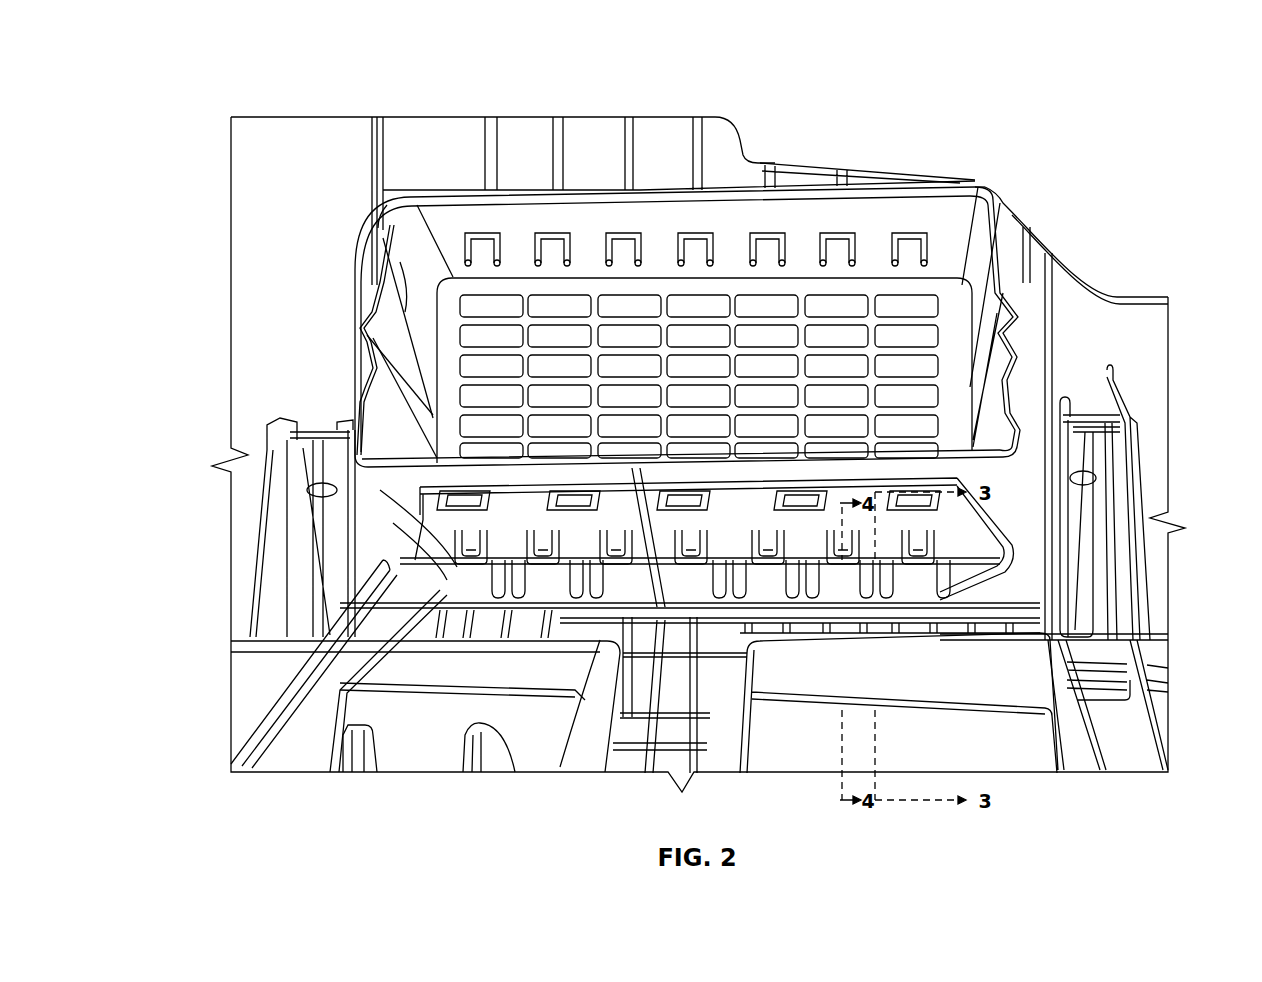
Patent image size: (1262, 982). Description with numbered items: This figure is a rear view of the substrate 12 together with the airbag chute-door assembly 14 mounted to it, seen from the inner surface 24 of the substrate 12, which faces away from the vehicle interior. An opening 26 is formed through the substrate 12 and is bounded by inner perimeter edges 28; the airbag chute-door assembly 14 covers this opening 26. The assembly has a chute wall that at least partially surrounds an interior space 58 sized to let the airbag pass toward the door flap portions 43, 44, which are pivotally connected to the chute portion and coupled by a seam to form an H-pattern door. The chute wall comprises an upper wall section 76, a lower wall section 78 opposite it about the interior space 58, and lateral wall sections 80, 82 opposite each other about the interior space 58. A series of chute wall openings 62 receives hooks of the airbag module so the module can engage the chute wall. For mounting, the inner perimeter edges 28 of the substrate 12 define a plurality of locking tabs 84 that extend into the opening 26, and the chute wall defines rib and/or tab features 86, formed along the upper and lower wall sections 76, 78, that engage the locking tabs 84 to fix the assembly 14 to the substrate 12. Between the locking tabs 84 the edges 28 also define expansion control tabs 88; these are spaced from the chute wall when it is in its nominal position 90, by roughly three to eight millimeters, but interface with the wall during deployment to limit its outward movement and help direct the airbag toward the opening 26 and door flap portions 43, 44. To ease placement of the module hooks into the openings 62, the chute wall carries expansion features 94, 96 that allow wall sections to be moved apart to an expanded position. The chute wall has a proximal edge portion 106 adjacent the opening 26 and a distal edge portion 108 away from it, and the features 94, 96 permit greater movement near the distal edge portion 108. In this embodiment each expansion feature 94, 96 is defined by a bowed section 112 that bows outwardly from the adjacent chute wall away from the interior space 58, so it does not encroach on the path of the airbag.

The substrate 12 is at (728, 142).
The airbag chute-door assembly 14 is at (985, 182).
The inner surface 24 is at (580, 140).
The opening 26 is at (996, 532).
The inner perimeter edges 28 is at (1107, 413).
The door flap portion 43 is at (578, 290).
The door flap portion 44 is at (976, 180).
The interior space 58 is at (847, 285).
The chute wall openings 62 is at (487, 232).
The upper wall section 76 is at (807, 198).
The lower wall section 78 is at (540, 470).
The lateral wall section 80 is at (1010, 377).
The lateral wall section 82 is at (373, 273).
The locking tabs 84 is at (530, 578).
The rib and/or tab features 86 is at (410, 523).
The expansion control tabs 88 is at (567, 553).
The nominal position 90 is at (450, 275).
The expansion feature 94 is at (367, 337).
The expansion feature 96 is at (1022, 287).
The proximal edge portion 106 is at (405, 310).
The distal edge portion 108 is at (380, 257).
The bowed section 112 is at (367, 322).